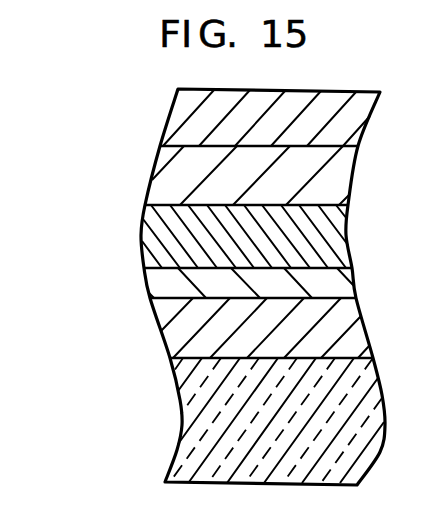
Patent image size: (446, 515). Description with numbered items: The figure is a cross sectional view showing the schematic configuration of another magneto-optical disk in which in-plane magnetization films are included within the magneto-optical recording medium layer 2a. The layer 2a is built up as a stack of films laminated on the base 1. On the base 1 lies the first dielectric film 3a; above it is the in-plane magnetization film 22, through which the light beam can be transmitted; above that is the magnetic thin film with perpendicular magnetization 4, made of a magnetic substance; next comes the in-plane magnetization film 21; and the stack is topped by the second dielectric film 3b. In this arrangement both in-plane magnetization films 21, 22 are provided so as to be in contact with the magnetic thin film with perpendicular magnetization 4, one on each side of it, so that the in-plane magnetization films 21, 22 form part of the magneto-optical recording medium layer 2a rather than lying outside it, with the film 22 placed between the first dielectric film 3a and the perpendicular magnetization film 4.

The base 1 is at (178, 433).
The magneto-optical recording medium layer 2a is at (94, 91).
The first dielectric film 3a is at (177, 334).
The second dielectric film 3b is at (175, 120).
The magnetic thin film with perpendicular magnetization 4 is at (148, 237).
The in-plane magnetization film 21 is at (167, 178).
The in-plane magnetization film 22 is at (167, 278).